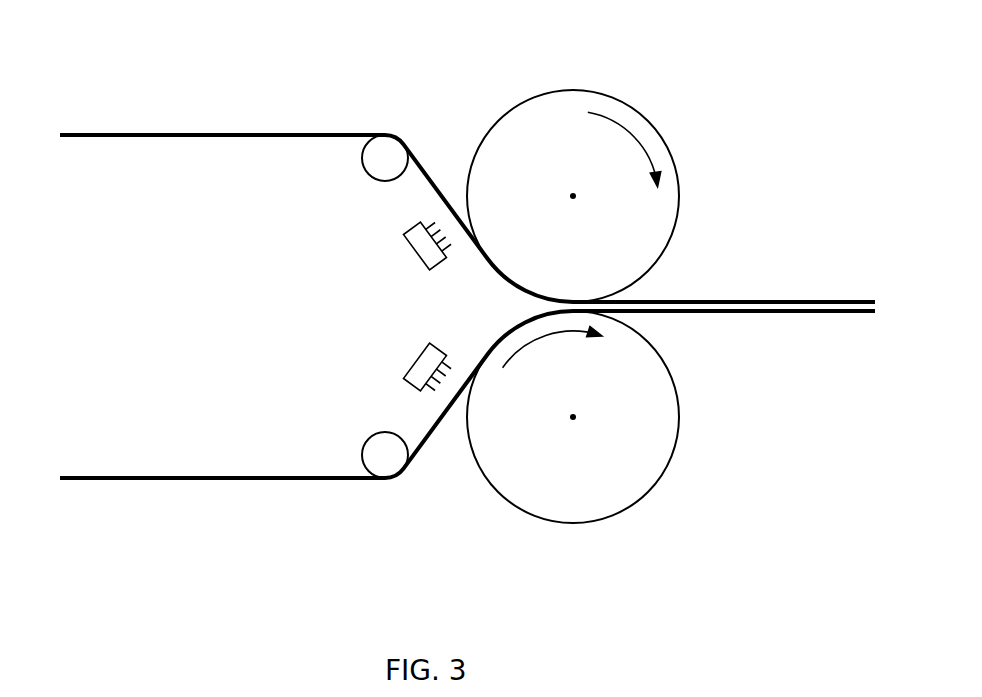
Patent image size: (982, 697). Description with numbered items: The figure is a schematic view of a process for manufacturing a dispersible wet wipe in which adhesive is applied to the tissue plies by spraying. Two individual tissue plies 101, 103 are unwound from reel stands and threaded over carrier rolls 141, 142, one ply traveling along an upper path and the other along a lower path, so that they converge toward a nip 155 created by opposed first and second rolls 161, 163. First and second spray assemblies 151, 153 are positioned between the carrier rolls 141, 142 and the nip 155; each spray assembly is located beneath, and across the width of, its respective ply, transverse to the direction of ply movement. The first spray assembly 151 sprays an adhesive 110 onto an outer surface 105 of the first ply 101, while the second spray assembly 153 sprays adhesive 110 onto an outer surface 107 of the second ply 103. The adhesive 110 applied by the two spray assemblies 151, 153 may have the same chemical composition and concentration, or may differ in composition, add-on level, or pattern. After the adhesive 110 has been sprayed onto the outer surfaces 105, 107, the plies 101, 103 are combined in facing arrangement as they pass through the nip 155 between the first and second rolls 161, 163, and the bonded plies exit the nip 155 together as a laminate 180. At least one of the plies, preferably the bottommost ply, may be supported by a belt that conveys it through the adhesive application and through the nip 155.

The tissue ply 101 is at (160, 120).
The tissue ply 103 is at (248, 482).
The outer surface 105 is at (203, 148).
The outer surface 107 is at (112, 462).
The adhesive 110 is at (423, 217).
The carrier roll 141 is at (387, 157).
The carrier roll 142 is at (383, 462).
The first spray assembly 151 is at (415, 253).
The second spray assembly 153 is at (402, 375).
The nip 155 is at (508, 305).
The first roll 161 is at (570, 113).
The second roll 163 is at (662, 429).
The laminate 180 is at (843, 333).